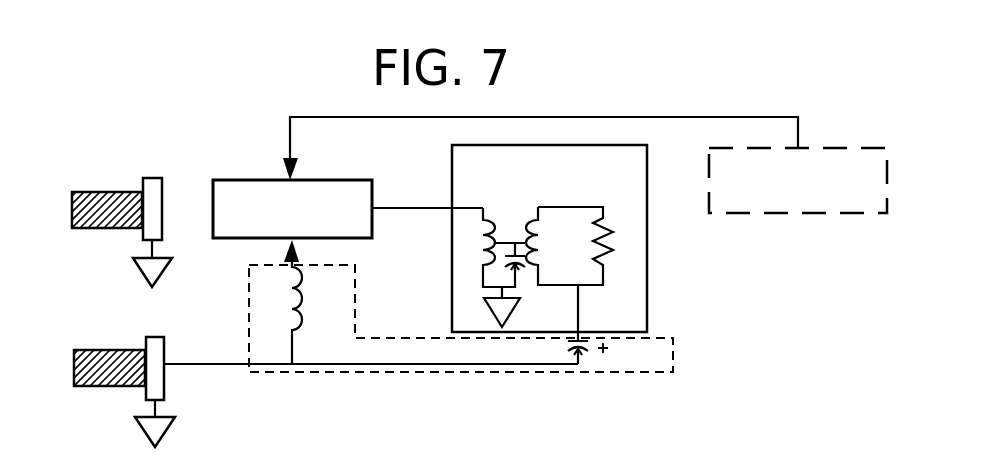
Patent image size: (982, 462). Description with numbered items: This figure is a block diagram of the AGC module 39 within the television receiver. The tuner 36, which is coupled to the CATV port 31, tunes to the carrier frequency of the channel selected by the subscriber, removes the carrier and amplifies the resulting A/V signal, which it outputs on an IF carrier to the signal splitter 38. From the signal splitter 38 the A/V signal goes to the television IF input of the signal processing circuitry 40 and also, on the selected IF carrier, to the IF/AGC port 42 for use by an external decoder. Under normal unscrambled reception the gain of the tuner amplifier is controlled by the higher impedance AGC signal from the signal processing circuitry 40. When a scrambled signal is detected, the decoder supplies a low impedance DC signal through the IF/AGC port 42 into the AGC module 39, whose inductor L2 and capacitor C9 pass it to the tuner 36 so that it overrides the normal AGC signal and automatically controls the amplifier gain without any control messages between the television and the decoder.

The CATV port 31 is at (113, 229).
The IF/AGC port 42 is at (98, 388).
The tuner 36 is at (245, 179).
The signal splitter 38 is at (578, 143).
The signal processing circuitry 40 is at (810, 148).
The AGC module 39 is at (382, 374).
The inductor L2 is at (312, 302).
The capacitor C9 is at (605, 355).